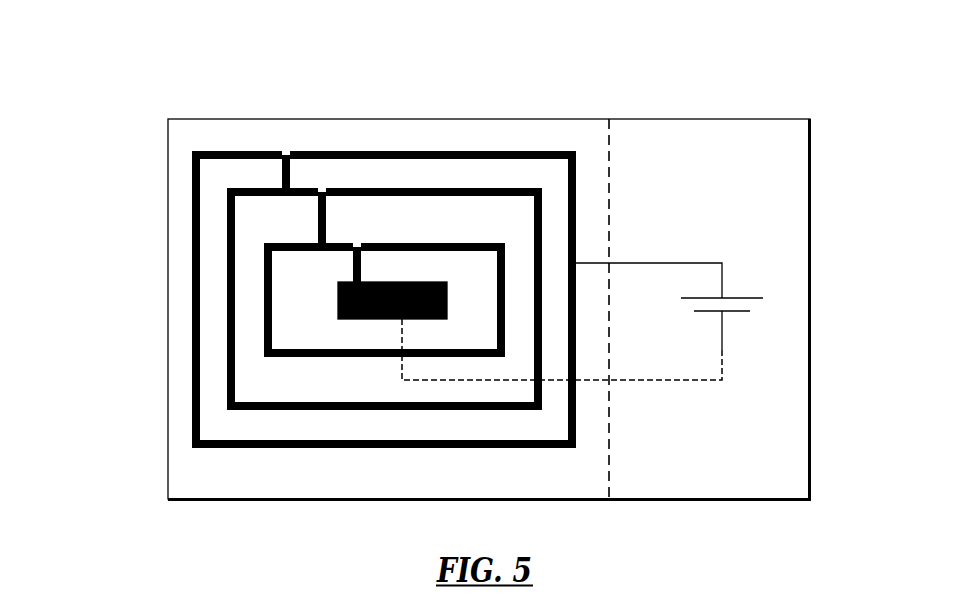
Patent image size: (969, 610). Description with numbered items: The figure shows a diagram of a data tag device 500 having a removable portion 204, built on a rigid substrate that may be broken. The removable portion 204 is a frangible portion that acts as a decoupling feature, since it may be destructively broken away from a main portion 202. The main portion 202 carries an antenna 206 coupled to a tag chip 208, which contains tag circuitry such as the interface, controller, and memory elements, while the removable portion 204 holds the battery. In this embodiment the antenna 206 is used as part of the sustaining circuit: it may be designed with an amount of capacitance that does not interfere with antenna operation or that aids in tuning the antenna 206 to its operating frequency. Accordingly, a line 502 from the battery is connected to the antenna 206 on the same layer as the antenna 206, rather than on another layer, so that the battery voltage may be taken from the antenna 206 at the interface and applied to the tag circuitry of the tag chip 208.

The data tag device 500 is at (89, 46).
The main portion 202 is at (168, 327).
The removable portion 204 is at (810, 453).
The antenna 206 is at (192, 409).
The tag chip 208 is at (380, 283).
The line 502 is at (636, 263).